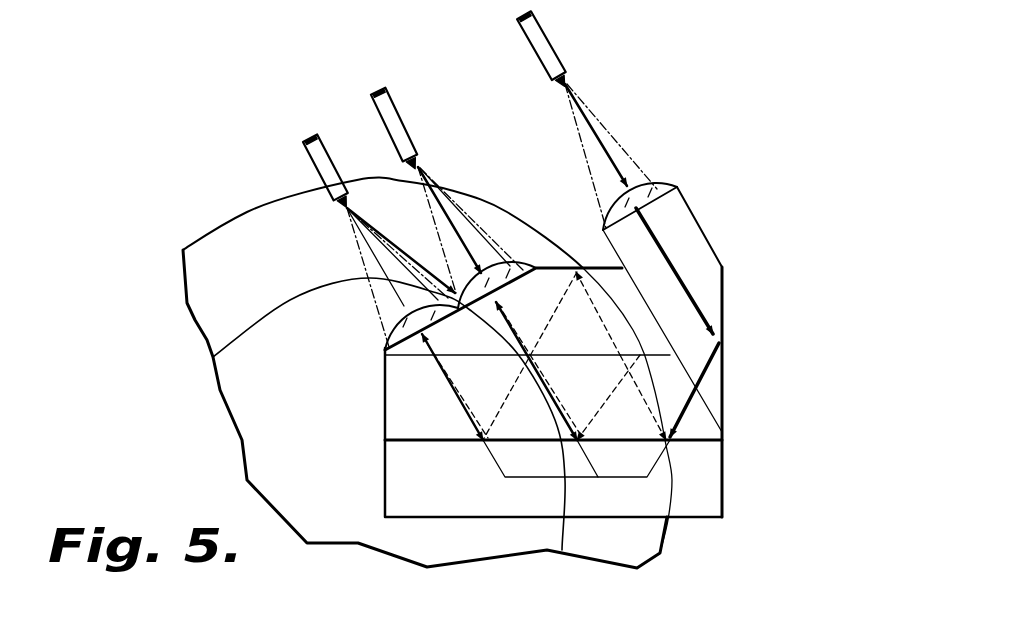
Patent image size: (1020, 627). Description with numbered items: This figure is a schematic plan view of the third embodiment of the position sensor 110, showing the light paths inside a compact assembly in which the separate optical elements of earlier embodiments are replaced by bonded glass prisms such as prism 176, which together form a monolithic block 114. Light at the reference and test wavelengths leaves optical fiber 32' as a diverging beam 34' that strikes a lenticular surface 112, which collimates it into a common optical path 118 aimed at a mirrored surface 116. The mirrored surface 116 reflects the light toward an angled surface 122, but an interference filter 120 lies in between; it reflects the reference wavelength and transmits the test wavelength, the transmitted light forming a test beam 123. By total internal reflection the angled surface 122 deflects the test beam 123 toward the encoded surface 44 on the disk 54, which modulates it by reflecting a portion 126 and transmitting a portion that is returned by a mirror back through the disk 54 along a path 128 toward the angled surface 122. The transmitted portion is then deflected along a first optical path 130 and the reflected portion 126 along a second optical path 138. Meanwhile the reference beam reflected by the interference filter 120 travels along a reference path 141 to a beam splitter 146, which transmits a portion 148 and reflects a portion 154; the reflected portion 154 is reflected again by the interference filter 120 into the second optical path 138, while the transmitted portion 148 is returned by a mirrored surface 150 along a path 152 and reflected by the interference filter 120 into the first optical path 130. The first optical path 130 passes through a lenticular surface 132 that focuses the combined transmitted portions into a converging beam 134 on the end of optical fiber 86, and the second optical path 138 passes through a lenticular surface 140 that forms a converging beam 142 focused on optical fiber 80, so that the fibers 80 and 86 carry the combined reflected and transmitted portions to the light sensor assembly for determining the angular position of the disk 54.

The optical fiber 32' is at (571, 50).
The diverging beam 34' is at (626, 136).
The encoded surface 44 is at (237, 302).
The disk 54 is at (303, 416).
The optical fiber 80 is at (406, 122).
The optical fiber 86 is at (308, 155).
The position sensor 110 is at (774, 147).
The lenticular surface 112 is at (680, 176).
The monolithic block 114 is at (708, 225).
The mirrored surface 116 is at (724, 378).
The common optical path 118 is at (694, 283).
The interference filter 120 is at (700, 438).
The angled surface 122 is at (403, 487).
The test beam 123 is at (655, 460).
The reflected portion of test beam 126 is at (588, 469).
The path 128 is at (526, 483).
The first optical path 130 is at (446, 396).
The lenticular surface 132 is at (396, 326).
The converging beam 134 is at (356, 262).
The second optical path 138 is at (524, 328).
The lenticular surface 140 is at (512, 268).
The reference path 141 is at (636, 391).
The converging beam 142 is at (492, 223).
The beam splitter 146 is at (656, 353).
The transmitted portion of reference beam 148 is at (606, 328).
The mirrored surface 150 is at (583, 268).
The path 152 is at (512, 395).
The reflected portion of reference beam 154 is at (592, 394).
The glass prism 176 is at (728, 487).